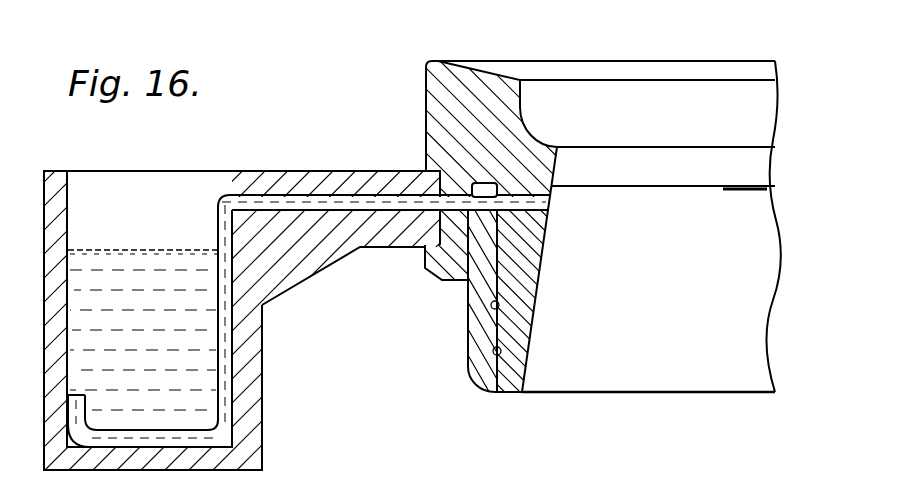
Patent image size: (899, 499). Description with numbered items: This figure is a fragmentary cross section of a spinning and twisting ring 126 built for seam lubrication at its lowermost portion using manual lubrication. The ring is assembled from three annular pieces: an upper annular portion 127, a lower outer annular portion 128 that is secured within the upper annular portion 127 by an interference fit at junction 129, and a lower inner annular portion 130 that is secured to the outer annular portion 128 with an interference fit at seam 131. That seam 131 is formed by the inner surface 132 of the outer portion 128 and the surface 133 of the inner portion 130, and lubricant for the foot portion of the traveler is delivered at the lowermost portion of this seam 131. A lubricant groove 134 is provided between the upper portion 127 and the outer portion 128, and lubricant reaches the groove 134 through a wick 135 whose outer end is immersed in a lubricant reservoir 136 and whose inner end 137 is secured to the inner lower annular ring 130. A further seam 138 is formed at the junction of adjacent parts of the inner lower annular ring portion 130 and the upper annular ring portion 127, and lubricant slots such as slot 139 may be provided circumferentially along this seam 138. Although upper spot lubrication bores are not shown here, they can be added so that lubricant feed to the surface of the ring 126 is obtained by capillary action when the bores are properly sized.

The spinning and twisting ring 126 is at (493, 62).
The upper annular portion 127 is at (426, 83).
The lower outer annular portion 128 is at (480, 333).
The junction 129 is at (430, 281).
The lower inner annular portion 130 is at (522, 394).
The seam 131 is at (498, 277).
The inner surface 132 is at (494, 351).
The surface 133 is at (497, 304).
The lubricant groove 134 is at (484, 183).
The wick 135 is at (293, 194).
The lubricant reservoir 136 is at (73, 220).
The inner end 137 is at (548, 201).
The seam 138 is at (675, 188).
The lubricant slot 139 is at (750, 191).